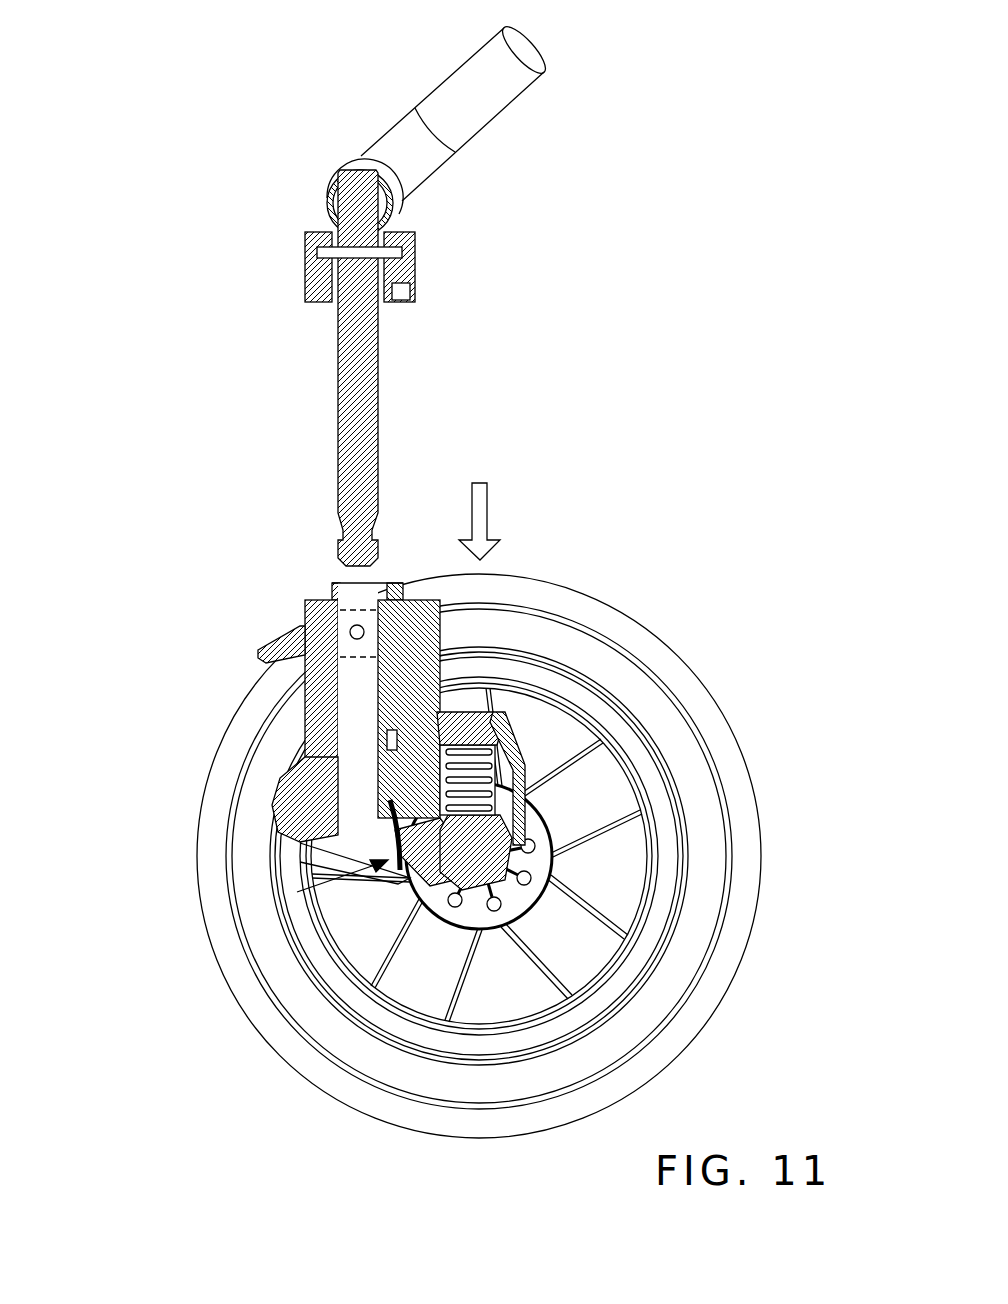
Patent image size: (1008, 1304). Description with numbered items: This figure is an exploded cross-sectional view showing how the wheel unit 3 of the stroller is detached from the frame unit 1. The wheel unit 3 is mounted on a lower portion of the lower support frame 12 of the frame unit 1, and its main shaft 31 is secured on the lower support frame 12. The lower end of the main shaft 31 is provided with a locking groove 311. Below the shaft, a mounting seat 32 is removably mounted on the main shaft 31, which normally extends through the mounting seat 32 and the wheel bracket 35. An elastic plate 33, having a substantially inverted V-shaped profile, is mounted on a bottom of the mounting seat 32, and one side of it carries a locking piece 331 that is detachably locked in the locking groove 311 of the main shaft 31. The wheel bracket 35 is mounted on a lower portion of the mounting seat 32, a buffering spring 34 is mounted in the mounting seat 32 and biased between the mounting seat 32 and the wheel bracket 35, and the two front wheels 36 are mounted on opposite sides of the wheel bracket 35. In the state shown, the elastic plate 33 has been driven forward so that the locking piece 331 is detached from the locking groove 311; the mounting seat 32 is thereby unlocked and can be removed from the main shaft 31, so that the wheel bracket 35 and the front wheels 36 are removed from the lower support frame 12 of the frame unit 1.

The frame unit 1 is at (330, 67).
The lower support frame 12 is at (447, 98).
The wheel unit 3 is at (233, 305).
The main shaft 31 is at (360, 193).
The locking groove 311 is at (340, 537).
The mounting seat 32 is at (490, 698).
The elastic plate 33 is at (400, 880).
The locking piece 331 is at (273, 805).
The buffering spring 34 is at (523, 731).
The wheel bracket 35 is at (515, 788).
The front wheel 36 is at (323, 1075).